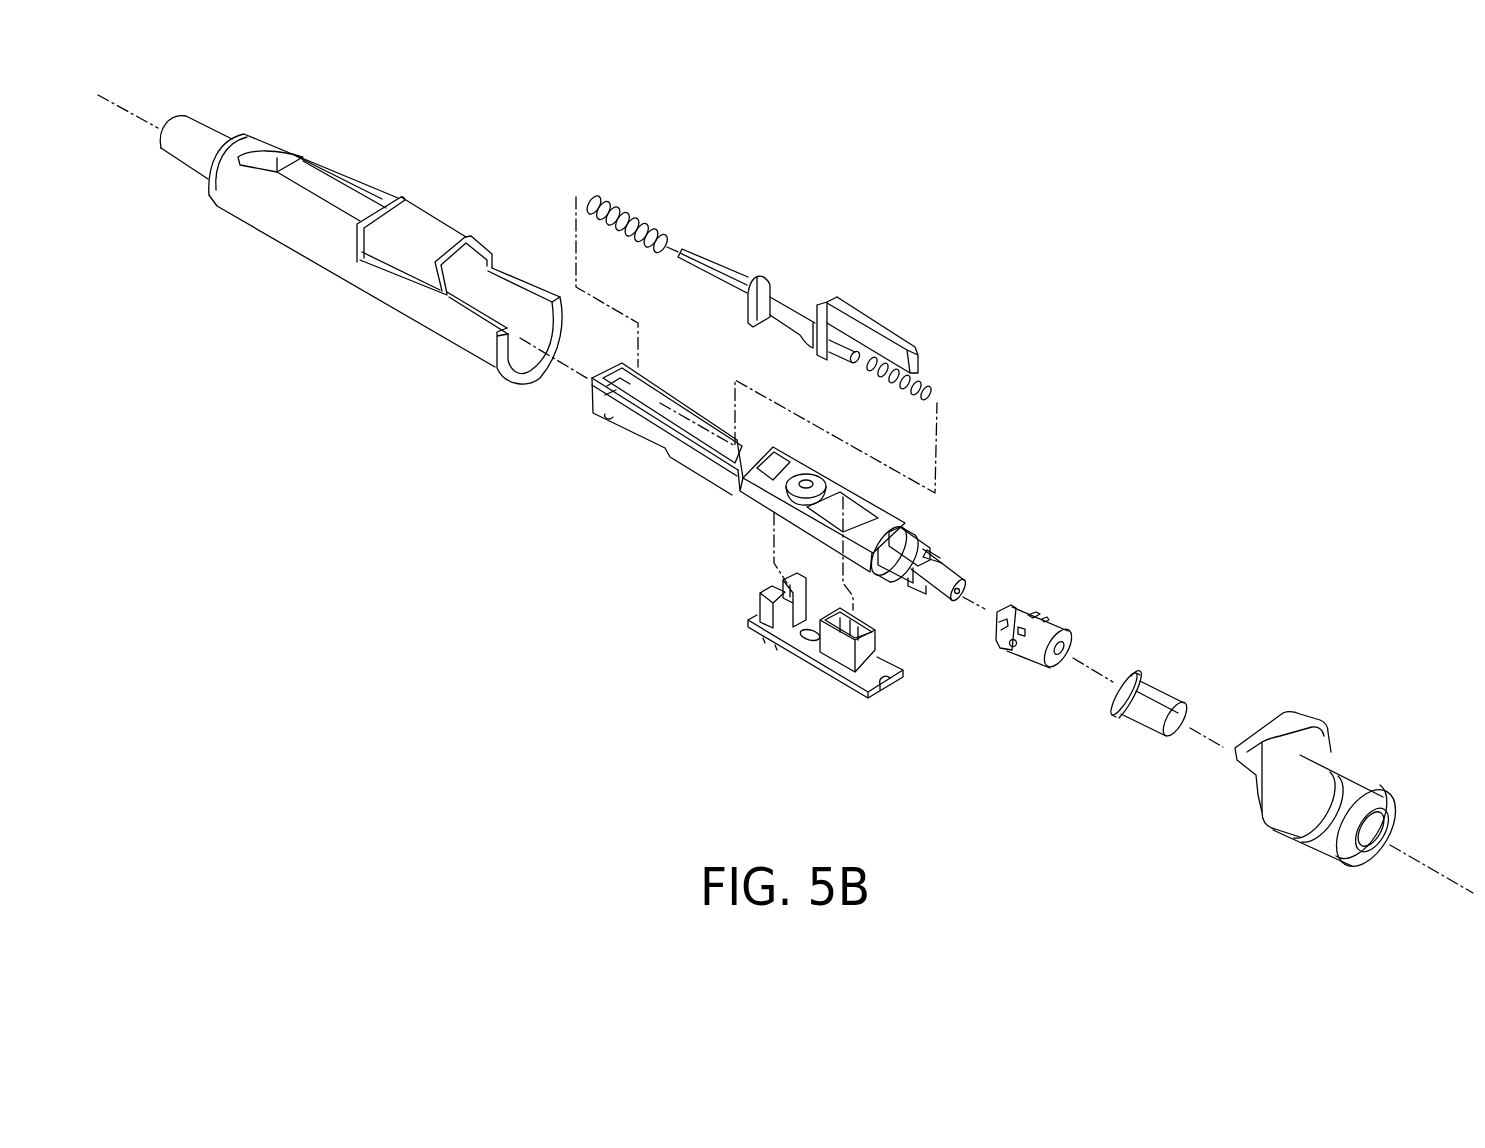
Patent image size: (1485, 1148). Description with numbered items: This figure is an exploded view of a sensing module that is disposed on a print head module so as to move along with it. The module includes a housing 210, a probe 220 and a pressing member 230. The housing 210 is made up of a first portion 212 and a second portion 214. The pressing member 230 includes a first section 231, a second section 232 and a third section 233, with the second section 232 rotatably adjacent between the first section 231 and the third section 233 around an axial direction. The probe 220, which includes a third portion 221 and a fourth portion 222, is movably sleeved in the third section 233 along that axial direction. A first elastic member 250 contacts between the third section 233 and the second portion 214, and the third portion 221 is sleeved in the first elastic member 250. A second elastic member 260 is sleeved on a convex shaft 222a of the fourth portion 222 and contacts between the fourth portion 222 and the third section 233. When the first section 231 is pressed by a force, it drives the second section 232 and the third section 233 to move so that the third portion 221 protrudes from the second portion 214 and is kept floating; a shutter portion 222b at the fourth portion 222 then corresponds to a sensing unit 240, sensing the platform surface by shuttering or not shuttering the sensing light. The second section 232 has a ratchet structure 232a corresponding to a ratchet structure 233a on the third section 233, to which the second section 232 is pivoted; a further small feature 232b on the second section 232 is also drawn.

The housing 210 is at (232, 543).
The first portion 212 is at (1293, 823).
The second portion 214 is at (392, 297).
The probe 220 is at (232, 630).
The third portion 221 is at (717, 267).
The fourth portion 222 is at (832, 302).
The convex shaft 222a is at (841, 356).
The shutter portion 222b is at (888, 333).
The pressing member 230 is at (232, 722).
The first section 231 is at (1181, 652).
The second section 232 is at (1077, 592).
The ratchet structure 232a is at (990, 623).
The protrusion of ferrule holder 232b is at (1013, 648).
The third section 233 is at (948, 517).
The ratchet structure 233a is at (945, 551).
The sensing unit 240 is at (768, 620).
The first elastic member 250 is at (632, 213).
The second elastic member 260 is at (930, 390).